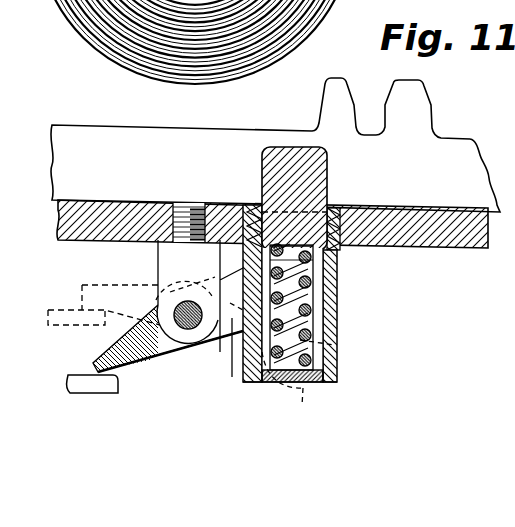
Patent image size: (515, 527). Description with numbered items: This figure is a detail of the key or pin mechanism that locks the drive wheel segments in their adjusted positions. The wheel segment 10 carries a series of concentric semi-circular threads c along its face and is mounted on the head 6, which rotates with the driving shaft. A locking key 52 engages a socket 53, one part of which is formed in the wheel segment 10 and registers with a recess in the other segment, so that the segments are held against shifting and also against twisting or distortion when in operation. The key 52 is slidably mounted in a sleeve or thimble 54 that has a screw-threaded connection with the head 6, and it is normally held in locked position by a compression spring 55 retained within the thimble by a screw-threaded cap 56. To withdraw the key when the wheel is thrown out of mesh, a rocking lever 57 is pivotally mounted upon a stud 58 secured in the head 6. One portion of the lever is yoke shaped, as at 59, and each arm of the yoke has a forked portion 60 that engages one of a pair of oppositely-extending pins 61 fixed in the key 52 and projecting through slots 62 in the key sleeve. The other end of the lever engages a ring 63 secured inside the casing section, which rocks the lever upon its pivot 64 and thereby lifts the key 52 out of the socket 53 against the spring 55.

The wheel segment 10 is at (338, 25).
The concentric semi-circular threads c is at (432, 102).
The head 6 is at (427, 248).
The locking key 52 is at (323, 175).
The socket 53 is at (327, 198).
The sleeve or thimble 54 is at (335, 332).
The compression spring 55 is at (333, 342).
The screw-threaded cap 56 is at (327, 385).
The rocking lever 57 is at (165, 348).
The stud 58 is at (199, 296).
The yoke-shaped portion 59 is at (232, 358).
The forked portion 60 is at (337, 297).
The pin 61 is at (337, 267).
The slot 62 is at (320, 323).
The ring 63 is at (77, 322).
The pivot 64 is at (188, 329).